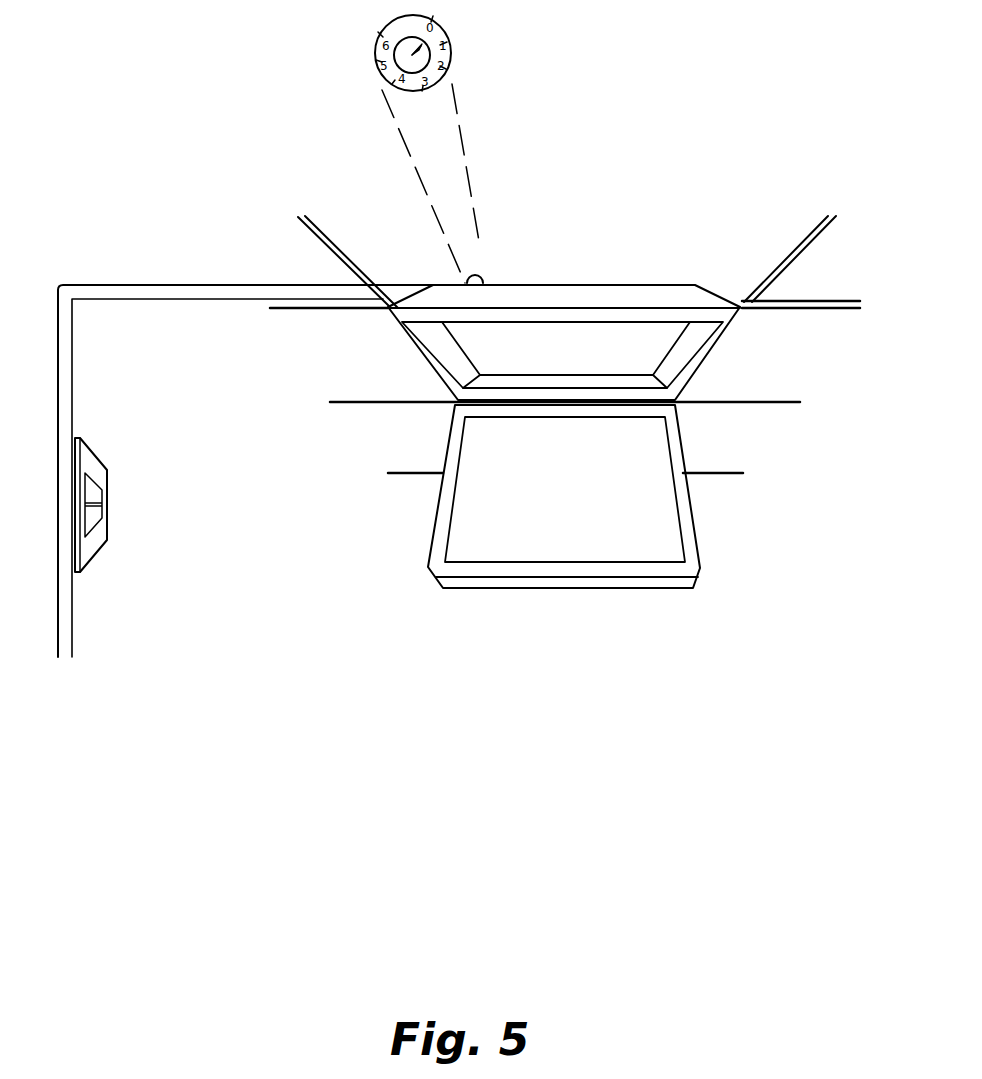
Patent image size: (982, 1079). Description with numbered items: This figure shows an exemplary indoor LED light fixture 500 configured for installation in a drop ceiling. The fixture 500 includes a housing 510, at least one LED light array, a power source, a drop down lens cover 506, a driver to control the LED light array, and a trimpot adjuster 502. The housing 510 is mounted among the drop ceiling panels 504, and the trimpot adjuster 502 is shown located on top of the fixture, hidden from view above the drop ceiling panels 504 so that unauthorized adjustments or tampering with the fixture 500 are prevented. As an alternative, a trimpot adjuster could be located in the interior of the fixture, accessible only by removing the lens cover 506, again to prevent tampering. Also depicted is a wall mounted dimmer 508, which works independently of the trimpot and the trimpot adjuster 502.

The indoor LED light fixture 500 is at (567, 406).
The trimpot adjuster 502 is at (476, 274).
The drop ceiling panels 504 is at (778, 335).
The lens cover 506 is at (655, 518).
The wall mounted dimmer 508 is at (95, 467).
The housing 510 is at (655, 288).